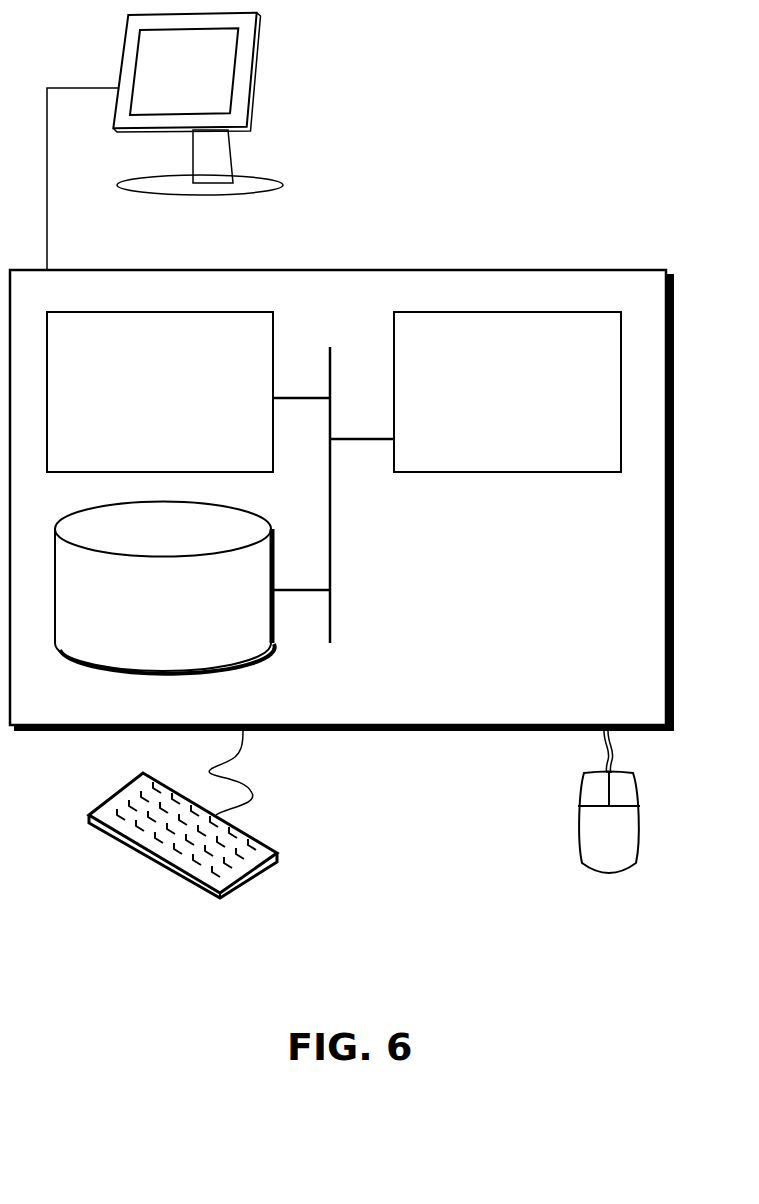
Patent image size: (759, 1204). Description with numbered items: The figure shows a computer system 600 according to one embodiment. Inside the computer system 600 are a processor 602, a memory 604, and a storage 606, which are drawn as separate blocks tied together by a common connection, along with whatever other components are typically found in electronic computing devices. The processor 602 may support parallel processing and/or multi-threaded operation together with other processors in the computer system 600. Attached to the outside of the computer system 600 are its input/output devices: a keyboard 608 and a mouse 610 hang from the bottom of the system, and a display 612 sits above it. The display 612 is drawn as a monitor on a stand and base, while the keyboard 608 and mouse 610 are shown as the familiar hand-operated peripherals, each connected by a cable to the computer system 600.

The computer system 600 is at (383, 238).
The processor 602 is at (489, 405).
The memory 604 is at (139, 405).
The storage 606 is at (145, 617).
The keyboard 608 is at (105, 837).
The mouse 610 is at (587, 847).
The display 612 is at (165, 141).